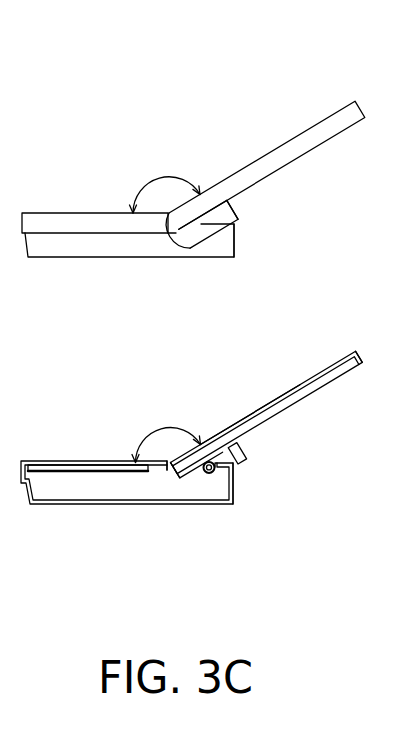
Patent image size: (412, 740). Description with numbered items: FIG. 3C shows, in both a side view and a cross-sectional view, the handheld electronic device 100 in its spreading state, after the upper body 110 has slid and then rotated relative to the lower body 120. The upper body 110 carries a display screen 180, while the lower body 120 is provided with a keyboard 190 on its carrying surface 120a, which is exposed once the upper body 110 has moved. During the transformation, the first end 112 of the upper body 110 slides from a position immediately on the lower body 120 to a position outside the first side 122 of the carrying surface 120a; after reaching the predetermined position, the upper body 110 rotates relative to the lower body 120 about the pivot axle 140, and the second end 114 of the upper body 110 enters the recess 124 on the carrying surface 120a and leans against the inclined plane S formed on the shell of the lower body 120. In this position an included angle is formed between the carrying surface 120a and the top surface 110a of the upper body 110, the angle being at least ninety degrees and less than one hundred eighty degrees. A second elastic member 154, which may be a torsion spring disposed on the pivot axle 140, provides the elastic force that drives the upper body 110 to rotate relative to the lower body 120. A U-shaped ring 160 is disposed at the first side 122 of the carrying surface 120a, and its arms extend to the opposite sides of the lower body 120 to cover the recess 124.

The handheld electronic device 100 is at (372, 607).
The upper body 110 is at (351, 117).
The top surface of the upper body 110a is at (295, 387).
The first end of the upper body 112 is at (364, 351).
The second end of the upper body 114 is at (167, 470).
The lower body 120 is at (68, 247).
The carrying surface 120a is at (73, 212).
The first side of the carrying surface 122 is at (239, 228).
The recess 124 is at (178, 480).
The pivot axle 140 is at (216, 473).
The second elastic member 154 is at (216, 490).
The U-shaped ring 160 is at (240, 210).
The display screen 180 is at (253, 418).
The keyboard 190 is at (43, 466).
The inclined plane S is at (203, 483).